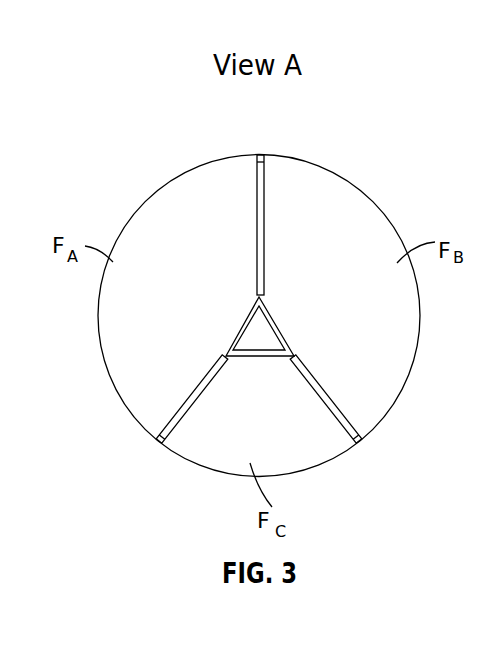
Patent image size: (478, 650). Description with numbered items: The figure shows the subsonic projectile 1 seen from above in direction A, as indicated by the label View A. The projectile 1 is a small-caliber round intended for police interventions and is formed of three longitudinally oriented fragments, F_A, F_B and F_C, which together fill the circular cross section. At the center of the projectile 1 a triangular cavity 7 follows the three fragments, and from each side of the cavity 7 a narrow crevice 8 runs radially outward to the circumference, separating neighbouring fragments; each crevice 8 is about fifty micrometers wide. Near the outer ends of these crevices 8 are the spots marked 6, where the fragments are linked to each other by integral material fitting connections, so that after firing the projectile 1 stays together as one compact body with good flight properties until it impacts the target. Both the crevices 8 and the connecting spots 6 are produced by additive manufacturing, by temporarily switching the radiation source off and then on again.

The subsonic projectile 1 is at (108, 176).
The connecting spots 6 is at (265, 153).
The triangular cavity 7 is at (248, 356).
The crevices 8 is at (264, 212).